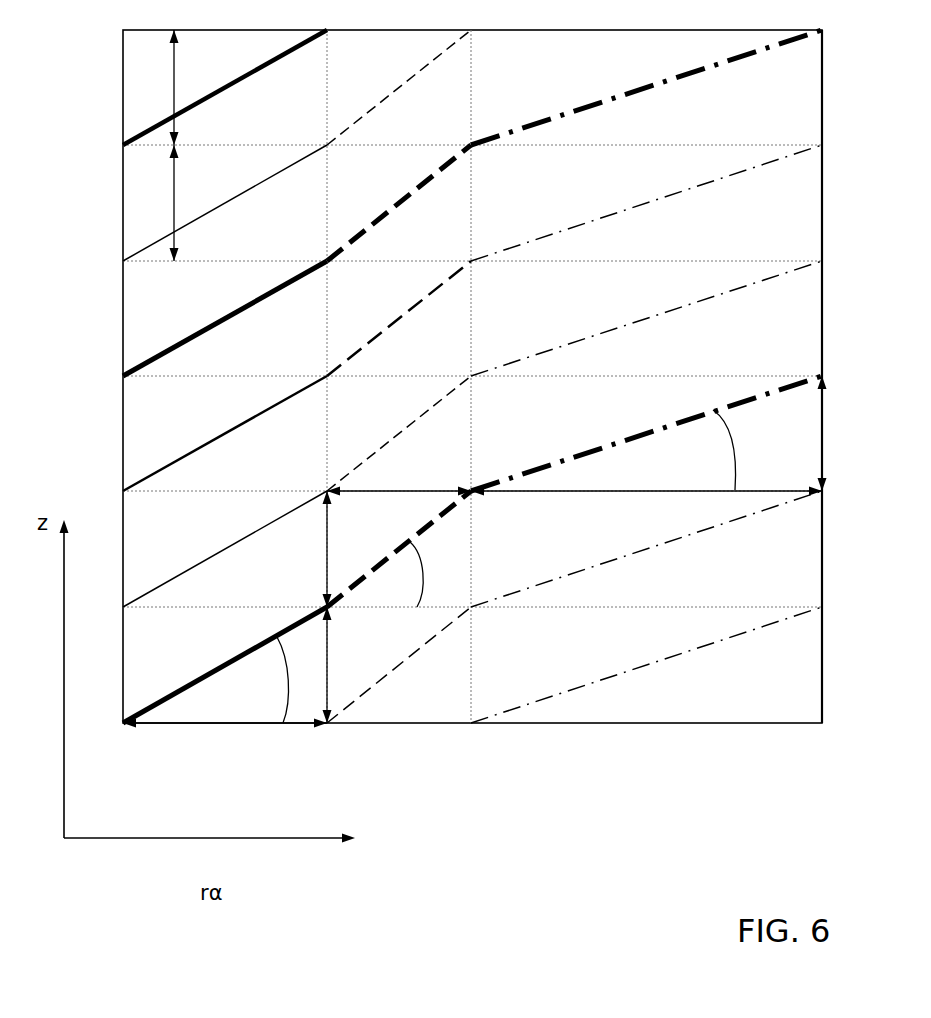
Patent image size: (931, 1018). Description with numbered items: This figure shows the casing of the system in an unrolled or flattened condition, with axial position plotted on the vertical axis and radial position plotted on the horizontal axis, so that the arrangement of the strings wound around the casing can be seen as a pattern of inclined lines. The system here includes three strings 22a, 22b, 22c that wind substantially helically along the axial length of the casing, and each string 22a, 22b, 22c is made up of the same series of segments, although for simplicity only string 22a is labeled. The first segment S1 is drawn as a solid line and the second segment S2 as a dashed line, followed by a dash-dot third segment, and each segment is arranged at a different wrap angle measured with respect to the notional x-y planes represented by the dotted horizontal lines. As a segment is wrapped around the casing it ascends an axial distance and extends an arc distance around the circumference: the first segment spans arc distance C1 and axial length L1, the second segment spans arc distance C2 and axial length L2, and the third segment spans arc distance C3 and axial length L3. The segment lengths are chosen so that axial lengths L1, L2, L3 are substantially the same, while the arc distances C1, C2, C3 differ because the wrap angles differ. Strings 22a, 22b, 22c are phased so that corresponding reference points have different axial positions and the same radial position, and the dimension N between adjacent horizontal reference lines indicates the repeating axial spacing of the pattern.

The string 22a is at (574, 460).
The string 22b is at (737, 525).
The string 22c is at (607, 683).
The first segment S1 is at (197, 675).
The second segment S2 is at (373, 571).
The first arc distance C1 is at (225, 744).
The second arc distance C2 is at (399, 475).
The third arc distance C3 is at (646, 510).
The first axial length L1 is at (341, 665).
The second axial length L2 is at (314, 549).
The third axial length L3 is at (837, 433).
The pitch N is at (187, 145).